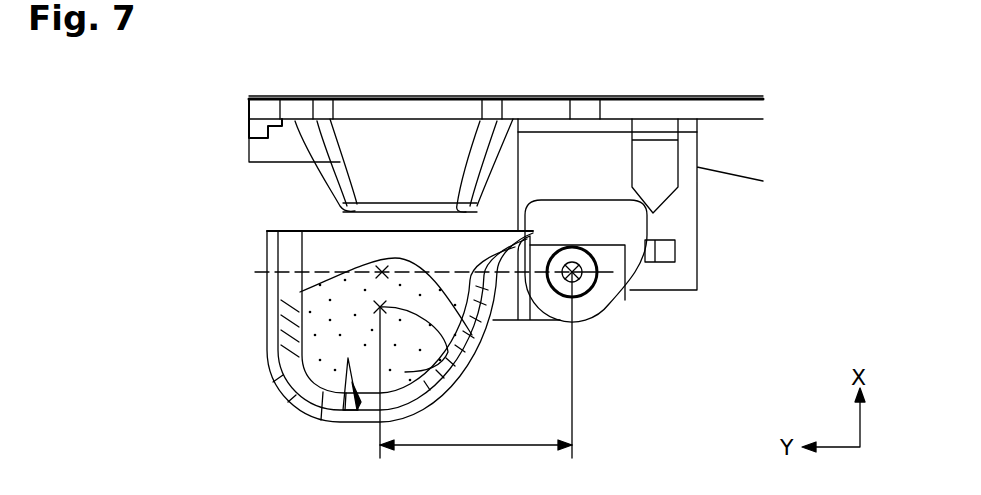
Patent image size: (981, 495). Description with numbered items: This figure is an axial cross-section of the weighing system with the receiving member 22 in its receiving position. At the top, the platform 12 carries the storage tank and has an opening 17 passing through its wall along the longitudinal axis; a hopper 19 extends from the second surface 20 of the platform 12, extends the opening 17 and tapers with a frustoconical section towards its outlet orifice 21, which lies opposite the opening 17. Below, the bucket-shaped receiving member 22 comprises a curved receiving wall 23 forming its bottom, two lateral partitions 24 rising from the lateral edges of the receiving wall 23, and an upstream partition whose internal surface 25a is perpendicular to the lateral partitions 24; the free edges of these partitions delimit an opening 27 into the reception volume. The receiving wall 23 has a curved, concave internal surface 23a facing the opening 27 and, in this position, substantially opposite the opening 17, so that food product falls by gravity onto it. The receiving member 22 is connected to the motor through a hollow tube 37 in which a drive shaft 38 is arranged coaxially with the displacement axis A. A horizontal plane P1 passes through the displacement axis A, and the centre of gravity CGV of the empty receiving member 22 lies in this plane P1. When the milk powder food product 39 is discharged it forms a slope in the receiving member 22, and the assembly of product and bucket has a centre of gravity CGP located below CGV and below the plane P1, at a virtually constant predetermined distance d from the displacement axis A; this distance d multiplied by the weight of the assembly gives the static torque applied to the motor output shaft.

The opening 17 is at (406, 110).
The platform 12 is at (737, 112).
The second surface 20 is at (735, 122).
The hopper 19 is at (325, 152).
The outlet orifice 21 is at (353, 207).
The opening 27 is at (318, 238).
The receiving member 22 is at (333, 357).
The receiving wall 23 is at (312, 410).
The internal surface 25a is at (292, 321).
The food product 39 is at (328, 357).
The internal surface 23a is at (345, 412).
The drive shaft 38 is at (657, 261).
The lateral partitions 24 is at (580, 270).
The hollow tube 37 is at (600, 278).
The displacement axis A is at (588, 278).
The plane P1 is at (255, 272).
The centre of gravity CGV is at (483, 340).
The centre of gravity CGP is at (467, 365).
The predetermined distance d is at (476, 365).